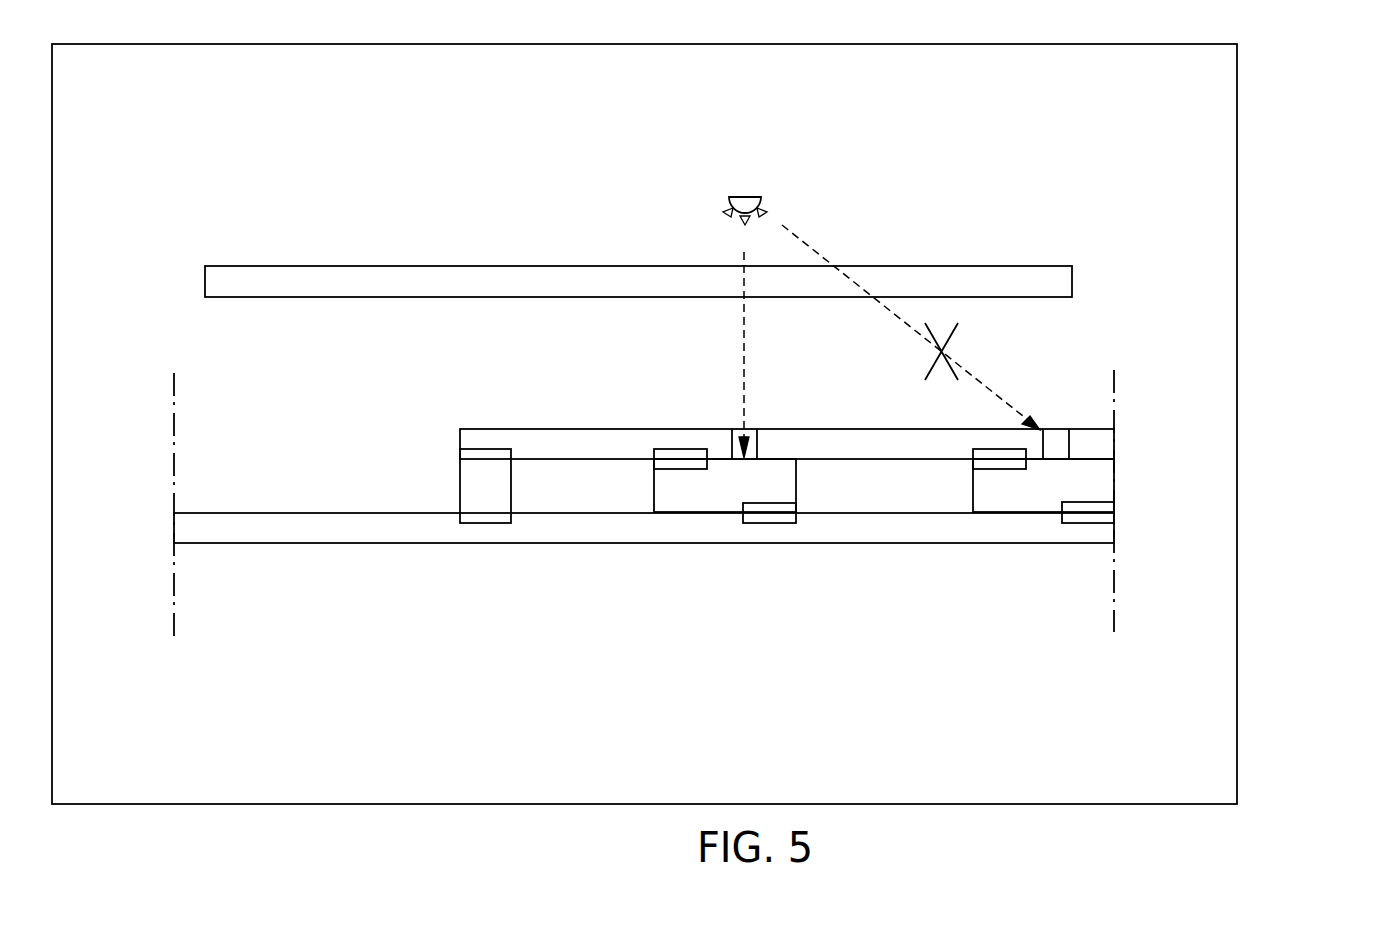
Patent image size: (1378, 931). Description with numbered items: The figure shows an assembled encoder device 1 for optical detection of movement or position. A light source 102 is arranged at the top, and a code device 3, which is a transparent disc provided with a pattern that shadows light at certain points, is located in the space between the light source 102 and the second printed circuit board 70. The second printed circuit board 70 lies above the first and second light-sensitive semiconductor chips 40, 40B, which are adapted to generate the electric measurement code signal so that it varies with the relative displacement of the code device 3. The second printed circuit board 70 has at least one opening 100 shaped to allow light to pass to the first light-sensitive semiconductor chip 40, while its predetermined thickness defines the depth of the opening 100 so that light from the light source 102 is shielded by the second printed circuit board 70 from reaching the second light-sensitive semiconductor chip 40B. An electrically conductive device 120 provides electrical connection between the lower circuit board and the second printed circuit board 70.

The encoder device 1 is at (1237, 613).
The code device 3 is at (205, 281).
The first light-sensitive semiconductor chip 40 is at (654, 486).
The second light-sensitive semiconductor chip 40B is at (1114, 485).
The second printed circuit board 70 is at (459, 443).
The opening 100 is at (752, 430).
The light source 102 is at (735, 195).
The electrically conductive device 120 is at (459, 487).